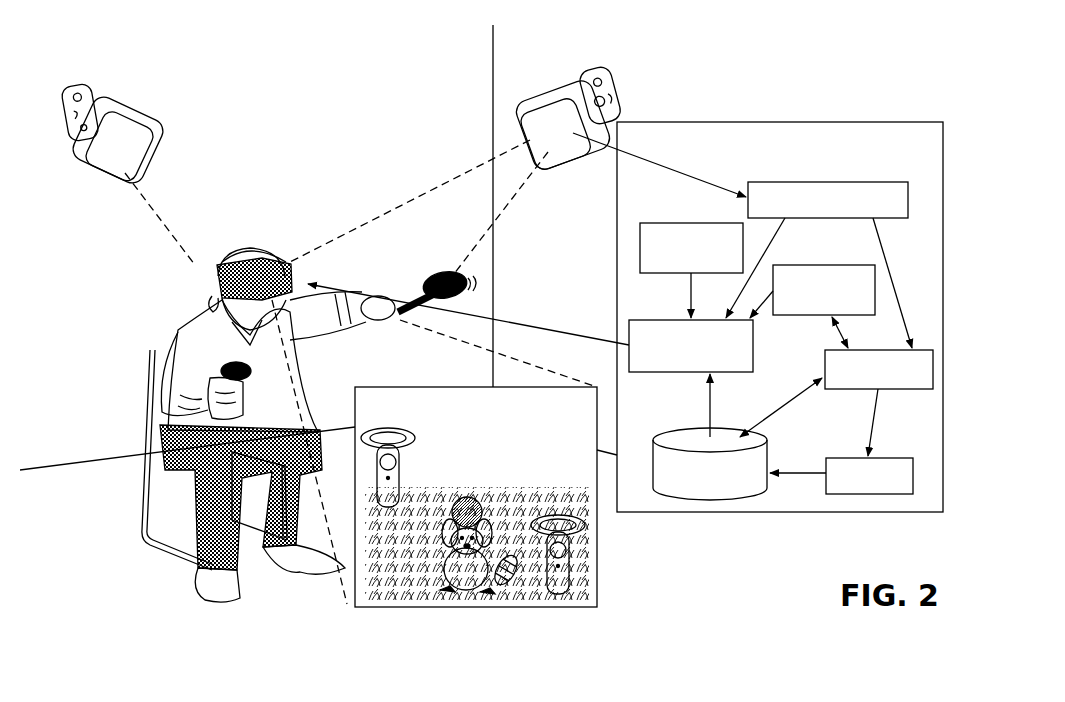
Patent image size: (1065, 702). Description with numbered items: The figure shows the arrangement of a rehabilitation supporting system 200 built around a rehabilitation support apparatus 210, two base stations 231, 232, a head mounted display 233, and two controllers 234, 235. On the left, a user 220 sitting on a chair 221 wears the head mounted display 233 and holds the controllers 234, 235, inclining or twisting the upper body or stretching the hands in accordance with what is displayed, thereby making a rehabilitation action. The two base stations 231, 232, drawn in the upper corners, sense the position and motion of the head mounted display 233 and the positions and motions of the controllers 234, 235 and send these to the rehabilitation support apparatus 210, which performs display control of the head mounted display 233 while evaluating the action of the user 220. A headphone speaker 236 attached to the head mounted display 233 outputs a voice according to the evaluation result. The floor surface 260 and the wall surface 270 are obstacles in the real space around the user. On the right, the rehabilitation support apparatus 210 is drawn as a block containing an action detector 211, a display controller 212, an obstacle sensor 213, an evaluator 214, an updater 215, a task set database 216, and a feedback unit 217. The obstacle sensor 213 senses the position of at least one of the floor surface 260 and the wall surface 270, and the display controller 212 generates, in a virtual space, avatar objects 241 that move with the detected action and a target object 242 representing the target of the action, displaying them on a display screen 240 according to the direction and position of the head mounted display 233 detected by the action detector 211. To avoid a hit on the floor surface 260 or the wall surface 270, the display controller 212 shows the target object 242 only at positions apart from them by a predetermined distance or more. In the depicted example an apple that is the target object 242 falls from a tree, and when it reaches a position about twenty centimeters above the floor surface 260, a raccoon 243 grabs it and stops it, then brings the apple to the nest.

The rehabilitation supporting system 200 is at (864, 66).
The rehabilitation support apparatus 210 is at (713, 121).
The action detector 211 is at (890, 186).
The display controller 212 is at (648, 373).
The obstacle sensor 213 is at (656, 222).
The evaluator 214 is at (824, 366).
The updater 215 is at (898, 457).
The task set database 216 is at (770, 462).
The feedback unit 217 is at (840, 264).
The user 220 is at (186, 326).
The chair 221 is at (148, 380).
The base station 231 is at (128, 105).
The base station 232 is at (547, 118).
The head mounted display 233 is at (270, 252).
The controller 234 is at (446, 272).
The controller 235 is at (250, 384).
The headphone speaker 236 is at (212, 300).
The display screen 240 is at (600, 562).
The avatar object 241 is at (546, 515).
The target object 242 is at (477, 497).
The raccoon 243 is at (437, 549).
The floor surface 260 is at (70, 590).
The wall surface 270 is at (313, 112).